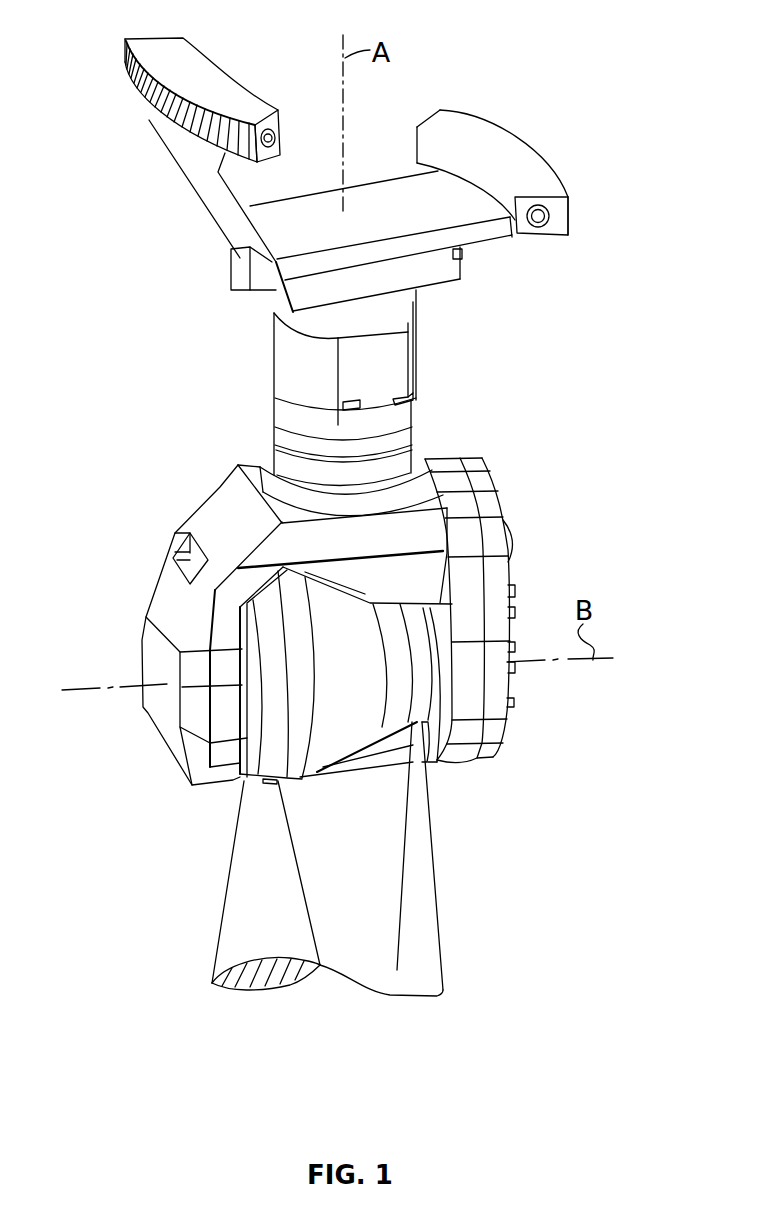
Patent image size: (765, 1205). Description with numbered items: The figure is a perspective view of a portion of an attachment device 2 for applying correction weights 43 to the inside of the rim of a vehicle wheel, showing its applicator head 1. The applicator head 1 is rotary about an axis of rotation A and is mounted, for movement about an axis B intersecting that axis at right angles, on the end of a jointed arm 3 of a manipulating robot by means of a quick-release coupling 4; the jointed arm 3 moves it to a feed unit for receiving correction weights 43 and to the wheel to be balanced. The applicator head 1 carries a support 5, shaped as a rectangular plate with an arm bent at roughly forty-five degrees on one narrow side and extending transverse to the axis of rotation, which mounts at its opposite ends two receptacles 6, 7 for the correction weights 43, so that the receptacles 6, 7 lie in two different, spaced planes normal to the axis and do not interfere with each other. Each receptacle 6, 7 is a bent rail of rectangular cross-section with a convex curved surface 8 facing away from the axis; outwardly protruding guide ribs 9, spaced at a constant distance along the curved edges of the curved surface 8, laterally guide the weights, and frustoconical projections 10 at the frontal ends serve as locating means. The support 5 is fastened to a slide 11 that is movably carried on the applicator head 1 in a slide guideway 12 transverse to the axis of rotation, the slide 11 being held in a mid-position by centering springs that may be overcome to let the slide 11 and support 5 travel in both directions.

The applicator head 1 is at (462, 302).
The attachment device 2 is at (543, 515).
The jointed arm 3 is at (428, 892).
The quick-release coupling 4 is at (273, 380).
The support 5 is at (213, 211).
The receptacle 6 is at (178, 77).
The receptacle 7 is at (465, 128).
The convex curved surface 8 is at (243, 143).
The guide ribs 9 is at (248, 124).
The frustoconical projections 10 is at (275, 140).
The slide 11 is at (238, 269).
The slide guideway 12 is at (278, 297).
The correction weights 43 is at (147, 116).